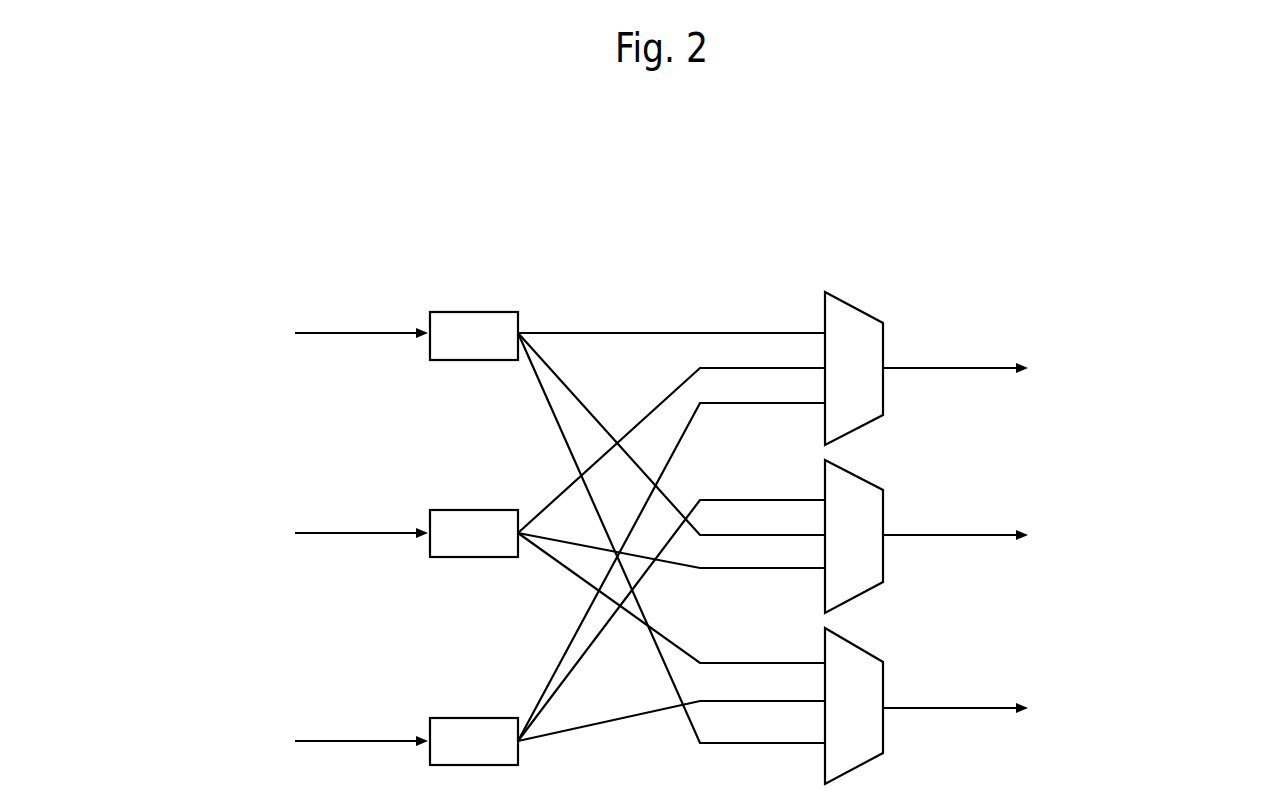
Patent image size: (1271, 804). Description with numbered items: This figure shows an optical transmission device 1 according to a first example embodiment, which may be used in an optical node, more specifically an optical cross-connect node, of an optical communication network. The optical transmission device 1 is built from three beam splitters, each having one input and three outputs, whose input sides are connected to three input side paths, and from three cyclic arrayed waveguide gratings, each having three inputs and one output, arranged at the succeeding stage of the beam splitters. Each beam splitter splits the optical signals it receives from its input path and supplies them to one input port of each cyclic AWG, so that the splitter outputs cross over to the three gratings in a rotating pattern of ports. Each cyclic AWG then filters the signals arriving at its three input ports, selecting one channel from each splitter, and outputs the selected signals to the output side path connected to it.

The optical transmission device 1 is at (869, 205).